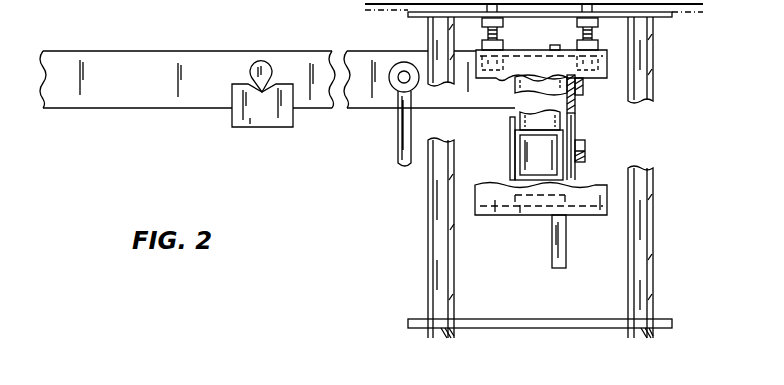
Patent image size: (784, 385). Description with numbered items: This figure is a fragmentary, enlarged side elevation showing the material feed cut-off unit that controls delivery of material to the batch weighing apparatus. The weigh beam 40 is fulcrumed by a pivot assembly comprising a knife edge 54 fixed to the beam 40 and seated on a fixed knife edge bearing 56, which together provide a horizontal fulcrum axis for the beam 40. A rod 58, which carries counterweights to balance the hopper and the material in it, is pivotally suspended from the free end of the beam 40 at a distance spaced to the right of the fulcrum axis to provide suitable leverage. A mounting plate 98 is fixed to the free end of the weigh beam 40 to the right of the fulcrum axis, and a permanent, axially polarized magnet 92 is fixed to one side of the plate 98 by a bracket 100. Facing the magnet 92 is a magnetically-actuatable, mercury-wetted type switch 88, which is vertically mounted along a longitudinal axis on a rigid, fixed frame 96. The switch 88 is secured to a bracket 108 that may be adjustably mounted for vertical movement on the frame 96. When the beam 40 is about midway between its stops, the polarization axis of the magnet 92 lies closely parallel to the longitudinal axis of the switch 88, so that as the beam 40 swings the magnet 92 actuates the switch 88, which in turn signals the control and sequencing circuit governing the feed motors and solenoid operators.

The beam 40 is at (100, 90).
The knife edge 54 is at (267, 64).
The knife edge bearing 56 is at (265, 122).
The rod 58 is at (398, 139).
The switch 88 is at (530, 155).
The magnet 92 is at (517, 94).
The frame 96 is at (552, 328).
The mounting plate 98 is at (552, 250).
The bracket 100 is at (585, 150).
The bracket 108 is at (591, 216).